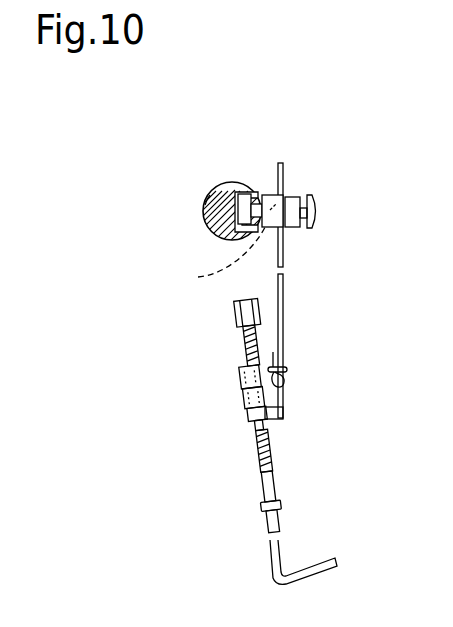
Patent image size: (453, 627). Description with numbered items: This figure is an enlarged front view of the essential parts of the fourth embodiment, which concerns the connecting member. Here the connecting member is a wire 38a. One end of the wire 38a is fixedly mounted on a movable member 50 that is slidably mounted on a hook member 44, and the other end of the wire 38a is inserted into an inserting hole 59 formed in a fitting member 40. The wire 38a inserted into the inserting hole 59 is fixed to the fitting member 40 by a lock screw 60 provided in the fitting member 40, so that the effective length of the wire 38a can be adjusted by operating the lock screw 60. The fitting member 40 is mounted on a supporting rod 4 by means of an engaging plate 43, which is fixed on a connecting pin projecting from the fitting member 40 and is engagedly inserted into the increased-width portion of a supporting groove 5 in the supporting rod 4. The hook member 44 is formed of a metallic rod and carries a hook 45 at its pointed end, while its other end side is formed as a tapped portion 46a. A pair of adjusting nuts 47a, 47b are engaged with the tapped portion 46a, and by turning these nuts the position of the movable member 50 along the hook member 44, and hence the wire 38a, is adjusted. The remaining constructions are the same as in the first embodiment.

The supporting rod 4 is at (217, 200).
The supporting groove 5 is at (212, 223).
The engaging plate 43 is at (238, 182).
The inserting hole 59 is at (216, 258).
The fitting member 40 is at (292, 200).
The lock screw 60 is at (318, 210).
The wire 38a is at (285, 303).
The adjusting nut 47a is at (242, 377).
The adjusting nut 47b is at (247, 403).
The movable member 50 is at (272, 408).
The tapped portion 46a is at (272, 447).
The hook member 44 is at (260, 473).
The hook 45 is at (312, 560).